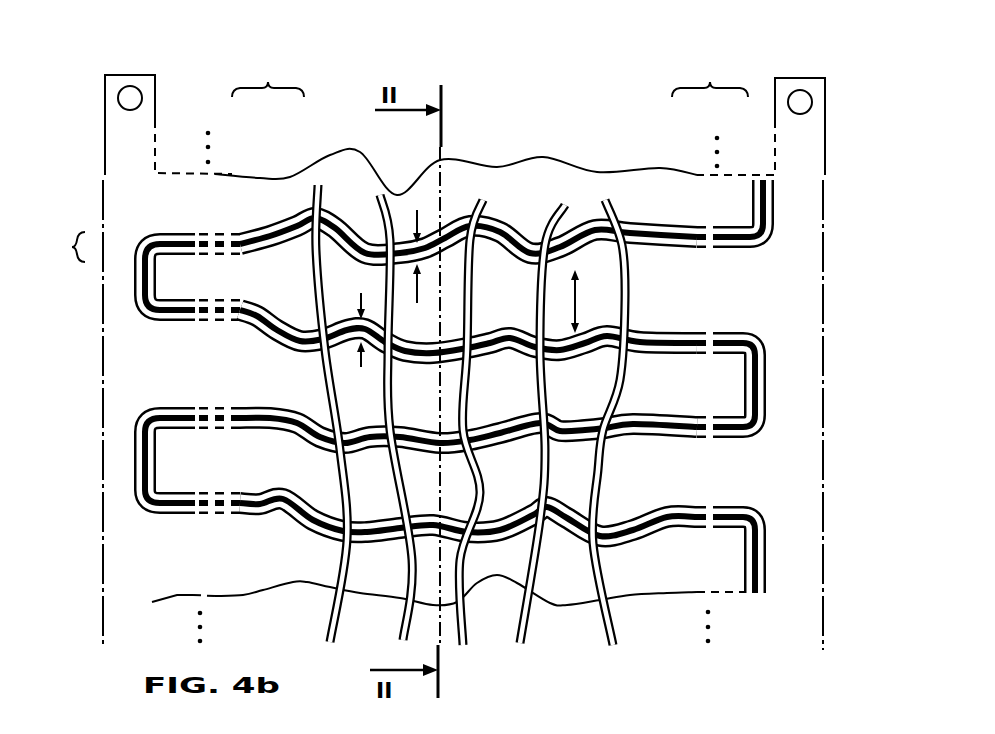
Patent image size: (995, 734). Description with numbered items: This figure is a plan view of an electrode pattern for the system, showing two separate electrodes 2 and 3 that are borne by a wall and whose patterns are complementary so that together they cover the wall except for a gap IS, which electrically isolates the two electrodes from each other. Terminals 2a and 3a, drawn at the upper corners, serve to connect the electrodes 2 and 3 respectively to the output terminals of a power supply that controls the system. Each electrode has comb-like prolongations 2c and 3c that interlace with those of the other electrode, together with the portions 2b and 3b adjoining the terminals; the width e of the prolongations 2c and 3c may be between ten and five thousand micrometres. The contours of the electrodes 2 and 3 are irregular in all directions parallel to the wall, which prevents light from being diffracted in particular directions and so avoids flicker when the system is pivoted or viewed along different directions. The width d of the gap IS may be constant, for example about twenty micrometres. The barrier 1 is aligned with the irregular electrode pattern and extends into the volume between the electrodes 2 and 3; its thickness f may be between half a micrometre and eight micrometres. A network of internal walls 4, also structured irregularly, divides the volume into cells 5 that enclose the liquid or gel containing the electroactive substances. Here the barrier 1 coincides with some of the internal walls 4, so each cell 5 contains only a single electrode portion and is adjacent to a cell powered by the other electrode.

The barrier 1 is at (512, 222).
The electrode 2 is at (203, 350).
The terminal 2a is at (119, 92).
The first electrode bar 2b is at (132, 152).
The prolongation of the electrode 2c is at (347, 187).
The electrode 3 is at (748, 351).
The terminal 3a is at (811, 96).
The second electrode bar 3b is at (793, 150).
The prolongation of the electrode 3c is at (648, 270).
The internal wall 4 is at (327, 393).
The cell 5 is at (514, 398).
The gap IS is at (134, 256).
The width of the gap d is at (410, 248).
The width of the prolongations e is at (583, 301).
The thickness of the barrier f is at (364, 319).